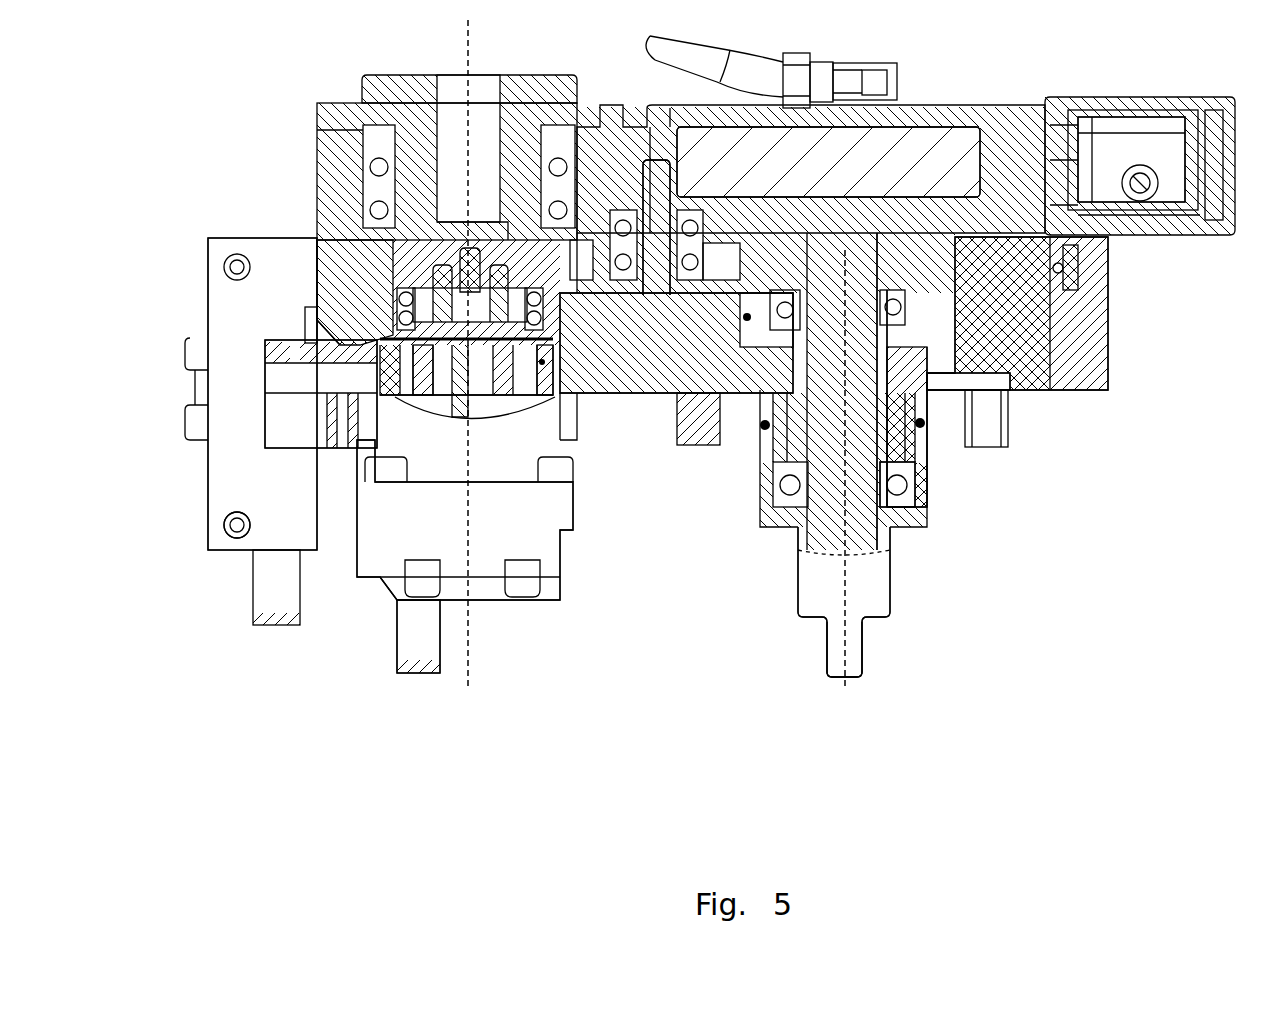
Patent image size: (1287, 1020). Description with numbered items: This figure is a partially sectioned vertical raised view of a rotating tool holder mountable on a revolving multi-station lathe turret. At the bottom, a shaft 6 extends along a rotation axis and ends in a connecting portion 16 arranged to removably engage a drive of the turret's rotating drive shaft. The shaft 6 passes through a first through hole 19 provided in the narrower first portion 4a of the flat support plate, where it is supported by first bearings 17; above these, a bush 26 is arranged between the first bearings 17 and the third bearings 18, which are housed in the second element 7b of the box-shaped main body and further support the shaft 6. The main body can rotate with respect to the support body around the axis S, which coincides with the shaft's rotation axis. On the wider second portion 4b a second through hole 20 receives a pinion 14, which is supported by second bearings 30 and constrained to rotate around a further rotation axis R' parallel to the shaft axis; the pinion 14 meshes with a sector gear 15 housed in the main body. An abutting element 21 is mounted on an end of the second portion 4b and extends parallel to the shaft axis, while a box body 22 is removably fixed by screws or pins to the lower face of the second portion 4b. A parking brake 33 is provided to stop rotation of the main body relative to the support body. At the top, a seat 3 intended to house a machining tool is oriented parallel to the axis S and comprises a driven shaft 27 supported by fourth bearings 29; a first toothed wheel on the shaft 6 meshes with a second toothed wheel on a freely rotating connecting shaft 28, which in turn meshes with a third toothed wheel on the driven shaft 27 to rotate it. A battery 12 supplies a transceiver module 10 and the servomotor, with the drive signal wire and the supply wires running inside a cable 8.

The seat 3 is at (388, 78).
The driven shaft 27 is at (450, 158).
The fourth bearings 29 is at (363, 195).
The second element 7b is at (312, 352).
The second portion 4b is at (310, 382).
The sector gear 15 is at (395, 365).
The parking brake 33 is at (253, 472).
The abutting element 21 is at (320, 423).
The second through hole 20 is at (410, 360).
The pinion 14 is at (470, 363).
The box body 22 is at (428, 513).
The further rotation axis R' is at (512, 355).
The second bearings 30 is at (513, 373).
The cable 8 is at (703, 330).
The axis S is at (843, 443).
The connecting shaft 28 is at (648, 177).
The battery 12 is at (937, 163).
The transceiver module 10 is at (1163, 138).
The first portion 4a is at (1020, 325).
The third bearings 18 is at (907, 303).
The bush 26 is at (882, 395).
The first through hole 19 is at (895, 430).
The first bearings 17 is at (900, 483).
The shaft 6 is at (867, 565).
The connecting portion 16 is at (845, 663).